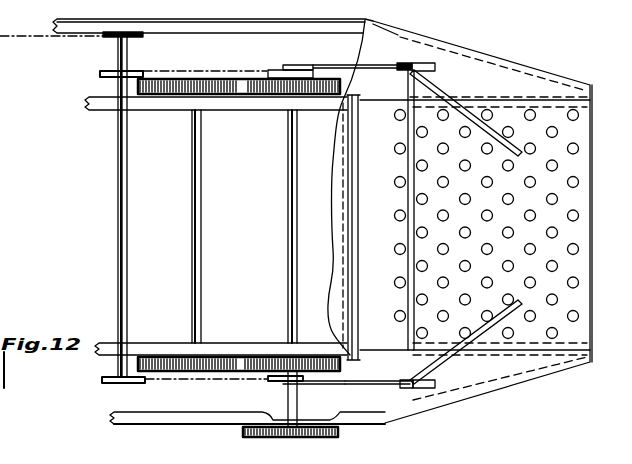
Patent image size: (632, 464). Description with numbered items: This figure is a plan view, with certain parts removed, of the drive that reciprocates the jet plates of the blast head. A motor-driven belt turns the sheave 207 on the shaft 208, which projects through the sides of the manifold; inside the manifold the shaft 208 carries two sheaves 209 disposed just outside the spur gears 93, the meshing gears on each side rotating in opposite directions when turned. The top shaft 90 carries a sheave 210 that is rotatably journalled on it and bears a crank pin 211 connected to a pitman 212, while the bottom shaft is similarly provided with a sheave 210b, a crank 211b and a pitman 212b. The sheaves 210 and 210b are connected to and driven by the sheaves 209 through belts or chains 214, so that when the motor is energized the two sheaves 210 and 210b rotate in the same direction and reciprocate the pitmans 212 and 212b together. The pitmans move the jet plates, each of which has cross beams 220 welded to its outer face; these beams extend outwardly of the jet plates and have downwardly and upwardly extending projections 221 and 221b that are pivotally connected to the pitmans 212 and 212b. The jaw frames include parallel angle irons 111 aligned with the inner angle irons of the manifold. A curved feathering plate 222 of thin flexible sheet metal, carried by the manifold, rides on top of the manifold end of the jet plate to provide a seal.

The sheave 207 is at (132, 30).
The shaft 208 is at (128, 43).
The sheaves 209 is at (107, 71).
The spur gears 93 is at (164, 95).
The belts or chains 214 is at (243, 56).
The crank pin 211 is at (292, 66).
The sheave 210 is at (318, 65).
The pitman 212 is at (380, 67).
The projection 221 is at (412, 64).
The parallel angle irons 111 is at (492, 96).
The cross beams 220 is at (410, 165).
The curved feathering plate 222 is at (353, 228).
The top shaft 90 is at (296, 130).
The sheave 210b is at (300, 388).
The crank 211b is at (289, 384).
The pitman 212b is at (410, 408).
The projection 221b is at (414, 388).